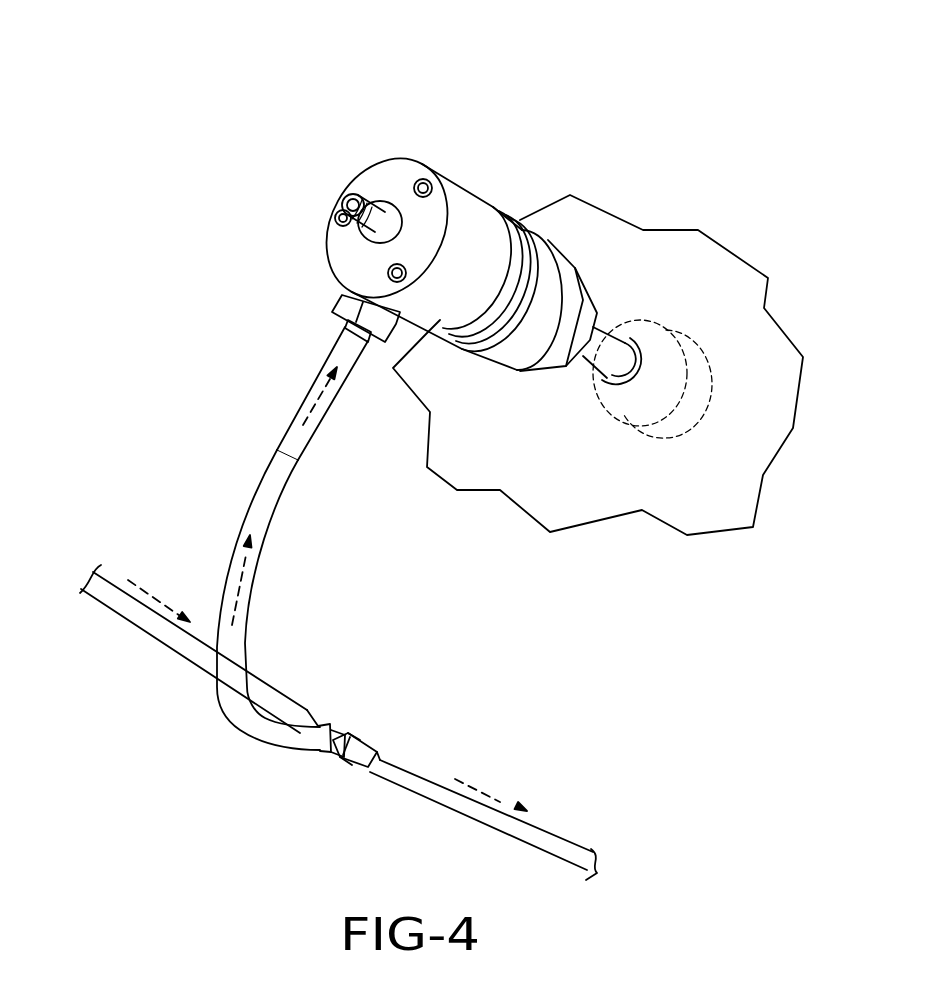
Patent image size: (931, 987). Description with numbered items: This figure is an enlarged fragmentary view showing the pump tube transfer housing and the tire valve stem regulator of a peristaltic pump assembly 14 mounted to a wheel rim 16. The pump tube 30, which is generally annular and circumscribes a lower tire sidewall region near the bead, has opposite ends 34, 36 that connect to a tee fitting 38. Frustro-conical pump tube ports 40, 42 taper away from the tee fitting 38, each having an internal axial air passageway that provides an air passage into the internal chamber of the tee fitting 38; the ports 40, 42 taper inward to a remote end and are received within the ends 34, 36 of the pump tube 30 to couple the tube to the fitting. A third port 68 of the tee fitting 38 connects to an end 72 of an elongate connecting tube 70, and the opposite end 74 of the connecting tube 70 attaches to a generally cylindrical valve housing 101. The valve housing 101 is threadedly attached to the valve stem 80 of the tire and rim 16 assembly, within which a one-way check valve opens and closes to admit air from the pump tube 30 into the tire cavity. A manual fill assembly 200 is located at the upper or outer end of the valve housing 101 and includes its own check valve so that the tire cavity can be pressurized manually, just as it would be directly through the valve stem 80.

The peristaltic pump assembly 14 is at (171, 99).
The manual fill assembly 200 is at (349, 175).
The valve housing 101 is at (490, 186).
The valve stem 80 is at (615, 322).
The wheel rim 16 is at (722, 268).
The opposite end of connecting tube 74 is at (330, 348).
The connecting tube 70 is at (250, 490).
The pump tube 30 is at (148, 628).
The end of connecting tube 72 is at (293, 752).
The third port 68 is at (337, 756).
The end of pump tube 36 is at (323, 720).
The end of pump tube 34 is at (352, 766).
The tee fitting 38 is at (362, 721).
The pump tube port 40 is at (377, 750).
The pump tube port 42 is at (307, 717).